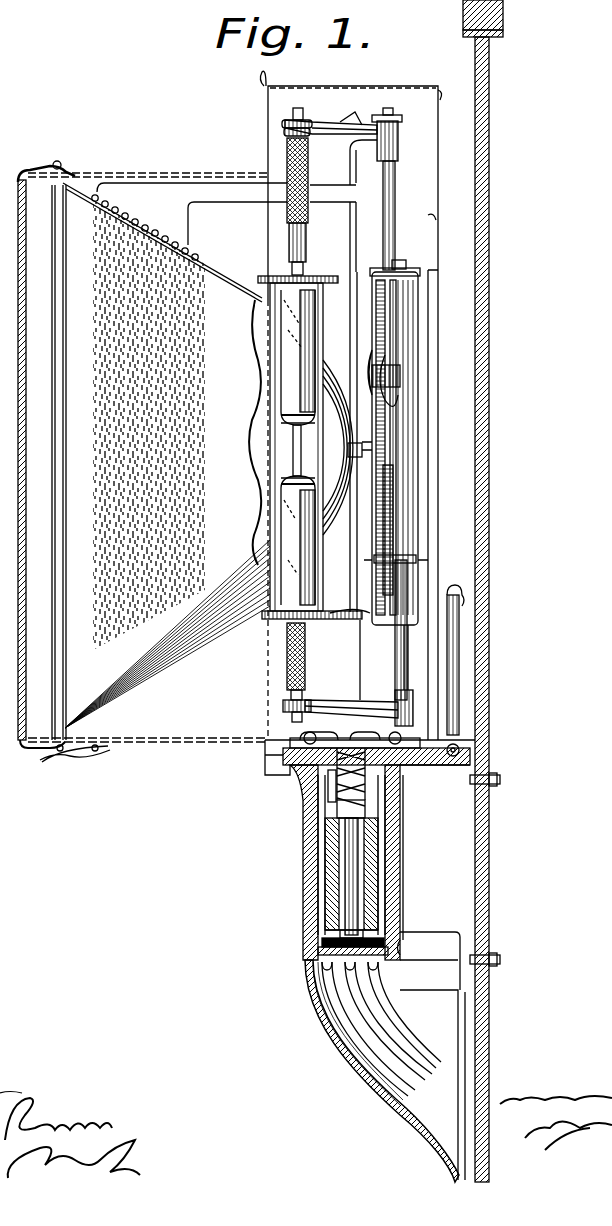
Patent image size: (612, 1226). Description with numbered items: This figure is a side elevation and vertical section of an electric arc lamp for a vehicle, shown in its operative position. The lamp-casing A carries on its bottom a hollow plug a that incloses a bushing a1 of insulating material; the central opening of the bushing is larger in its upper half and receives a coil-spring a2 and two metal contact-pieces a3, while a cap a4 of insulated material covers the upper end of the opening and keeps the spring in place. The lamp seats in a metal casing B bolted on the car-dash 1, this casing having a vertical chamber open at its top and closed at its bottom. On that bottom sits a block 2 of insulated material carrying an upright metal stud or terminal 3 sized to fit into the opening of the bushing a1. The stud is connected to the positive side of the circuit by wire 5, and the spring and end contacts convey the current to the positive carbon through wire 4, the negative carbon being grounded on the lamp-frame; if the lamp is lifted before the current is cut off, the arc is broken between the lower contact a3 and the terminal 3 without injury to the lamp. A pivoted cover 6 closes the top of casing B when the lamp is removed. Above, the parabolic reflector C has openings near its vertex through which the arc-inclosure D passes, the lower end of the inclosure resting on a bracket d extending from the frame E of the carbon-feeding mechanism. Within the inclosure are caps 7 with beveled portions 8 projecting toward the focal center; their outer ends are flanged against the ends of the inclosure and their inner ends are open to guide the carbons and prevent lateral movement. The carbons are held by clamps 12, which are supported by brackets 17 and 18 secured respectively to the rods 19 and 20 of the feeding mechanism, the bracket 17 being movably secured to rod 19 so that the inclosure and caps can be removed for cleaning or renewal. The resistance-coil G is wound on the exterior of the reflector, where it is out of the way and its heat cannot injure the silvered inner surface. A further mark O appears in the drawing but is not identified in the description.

The car-dash 1 is at (490, 591).
The block of insulated material 2 is at (312, 962).
The upright metal stud or terminal 3 is at (345, 920).
The wire 4 is at (370, 658).
The wire 5 is at (432, 1056).
The pivoted cover 6 is at (462, 670).
The caps 7 is at (258, 626).
The beveled portions 8 is at (280, 413).
The carbon clamp 12 is at (298, 415).
The bracket 17 is at (325, 128).
The bracket 18 is at (328, 700).
The rod of the carbon-feeding mechanism 19 is at (392, 198).
The rod of the carbon-feeding mechanism 20 is at (389, 661).
The lamp-casing A is at (143, 461).
The metal casing B is at (303, 905).
The parabolic reflector C is at (326, 405).
The arc-inclosure D is at (260, 443).
The frame of the carbon-feeding mechanism E is at (418, 484).
The resistance-coil G is at (108, 198).
The nozzle O is at (210, 233).
The bracket d is at (348, 597).
The hollow plug a is at (330, 790).
The bushing a1 is at (345, 832).
The coil-spring a2 is at (312, 780).
The metal contact-pieces a3 is at (345, 742).
The cap a4 is at (355, 734).